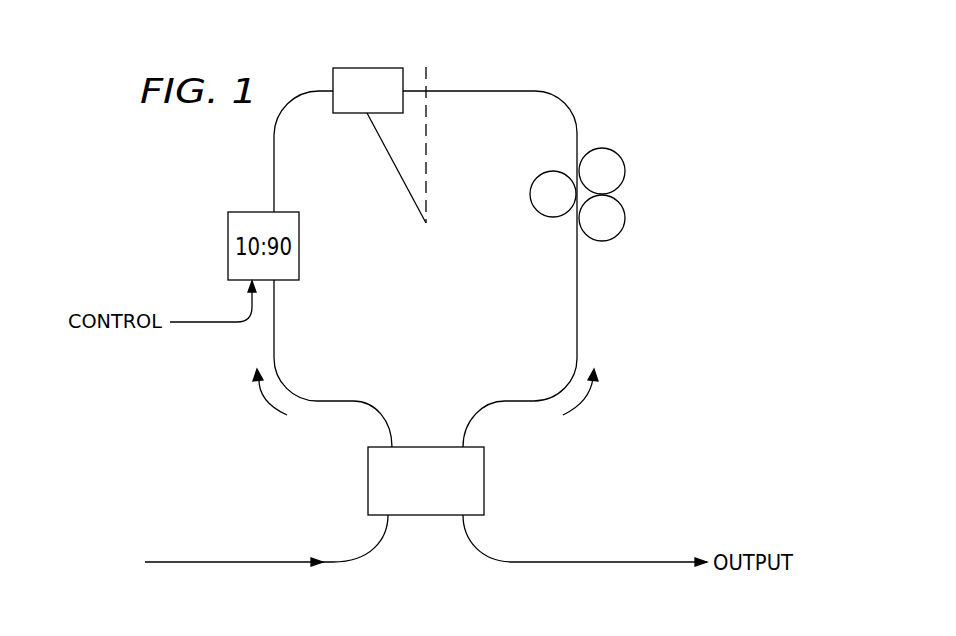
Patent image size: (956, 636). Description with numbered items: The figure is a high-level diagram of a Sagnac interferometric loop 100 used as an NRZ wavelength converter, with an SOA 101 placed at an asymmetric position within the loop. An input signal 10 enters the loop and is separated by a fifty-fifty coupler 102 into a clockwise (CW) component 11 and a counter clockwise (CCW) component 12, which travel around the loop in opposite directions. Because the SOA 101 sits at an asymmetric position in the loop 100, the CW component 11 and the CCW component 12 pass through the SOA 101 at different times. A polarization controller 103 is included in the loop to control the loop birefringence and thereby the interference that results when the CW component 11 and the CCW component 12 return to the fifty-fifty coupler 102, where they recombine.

The Sagnac interferometric loop 100 is at (118, 188).
The SOA 101 is at (353, 67).
The 50:50 coupler 102 is at (425, 515).
The polarization controller 103 is at (650, 184).
The input signal 10 is at (110, 545).
The clockwise (CW) component 11 is at (310, 420).
The counter clockwise (CCW) component 12 is at (543, 418).